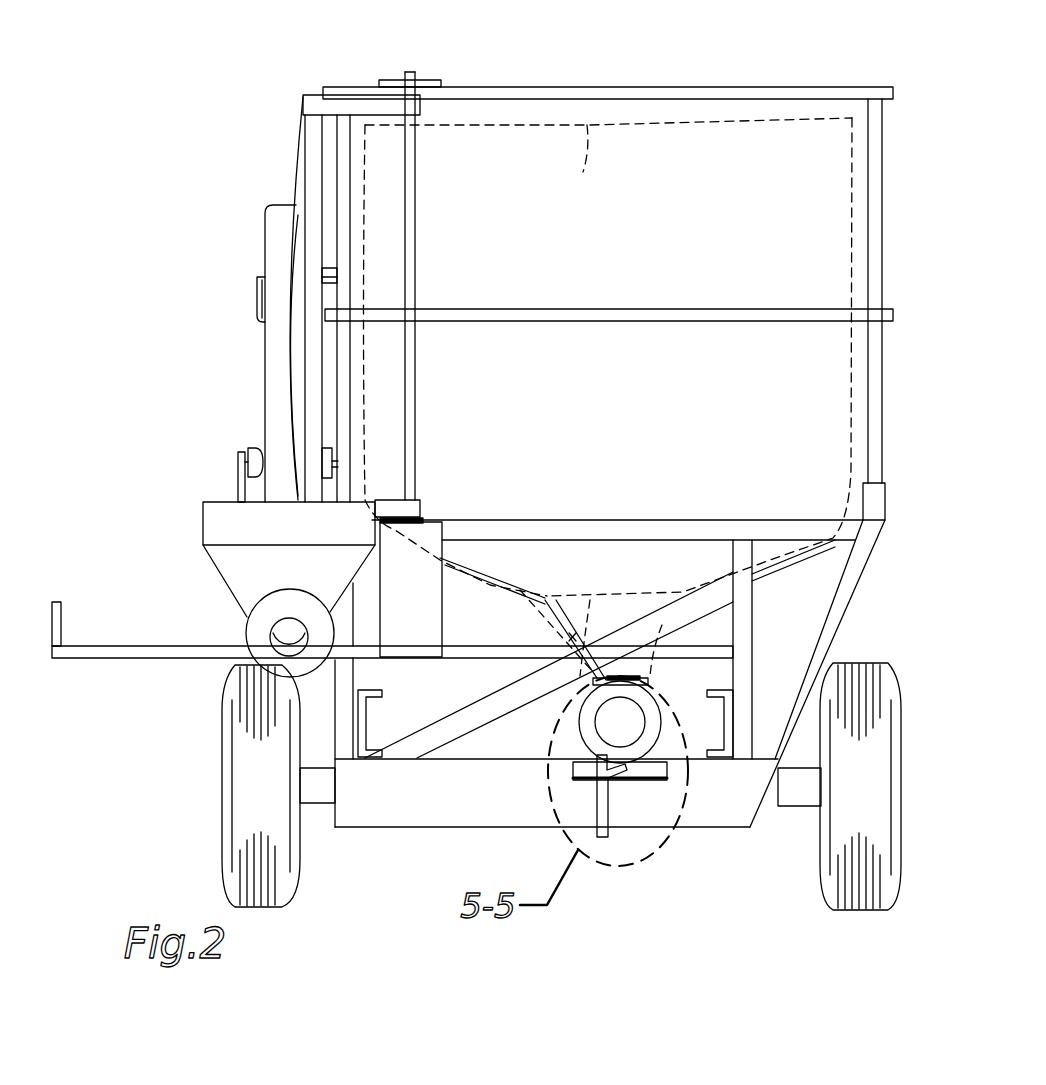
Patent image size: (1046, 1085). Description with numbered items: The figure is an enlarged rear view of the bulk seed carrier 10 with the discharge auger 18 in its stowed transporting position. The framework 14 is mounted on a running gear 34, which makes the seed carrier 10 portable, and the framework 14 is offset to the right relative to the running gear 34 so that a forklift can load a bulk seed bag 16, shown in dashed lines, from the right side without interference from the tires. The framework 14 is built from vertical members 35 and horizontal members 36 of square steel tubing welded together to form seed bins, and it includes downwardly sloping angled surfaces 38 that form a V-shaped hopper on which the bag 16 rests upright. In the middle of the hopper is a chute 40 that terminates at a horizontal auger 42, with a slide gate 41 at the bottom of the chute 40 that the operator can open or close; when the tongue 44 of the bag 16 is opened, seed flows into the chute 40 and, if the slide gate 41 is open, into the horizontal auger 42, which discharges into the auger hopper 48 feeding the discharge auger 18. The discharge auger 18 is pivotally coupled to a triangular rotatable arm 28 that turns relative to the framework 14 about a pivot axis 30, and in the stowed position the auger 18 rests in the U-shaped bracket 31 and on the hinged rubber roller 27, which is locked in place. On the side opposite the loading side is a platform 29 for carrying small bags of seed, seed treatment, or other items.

The bulk seed carrier 10 is at (195, 83).
The framework 14 is at (690, 87).
The bulk seed bag 16 is at (583, 176).
The discharge auger 18 is at (270, 370).
The rubber roller 27 is at (258, 450).
The rotatable arm 28 is at (298, 172).
The platform 29 is at (137, 618).
The pivot axis 30 is at (410, 72).
The U-shaped bracket 31 is at (256, 288).
The running gear 34 is at (790, 826).
The vertical members 35 is at (343, 153).
The horizontal members 36 is at (497, 313).
The angled surfaces 38 is at (497, 583).
The chute 40 is at (545, 633).
The slide gate 41 is at (653, 687).
The horizontal auger 42 is at (585, 718).
The tongue 44 is at (585, 596).
The auger hopper 48 is at (212, 503).